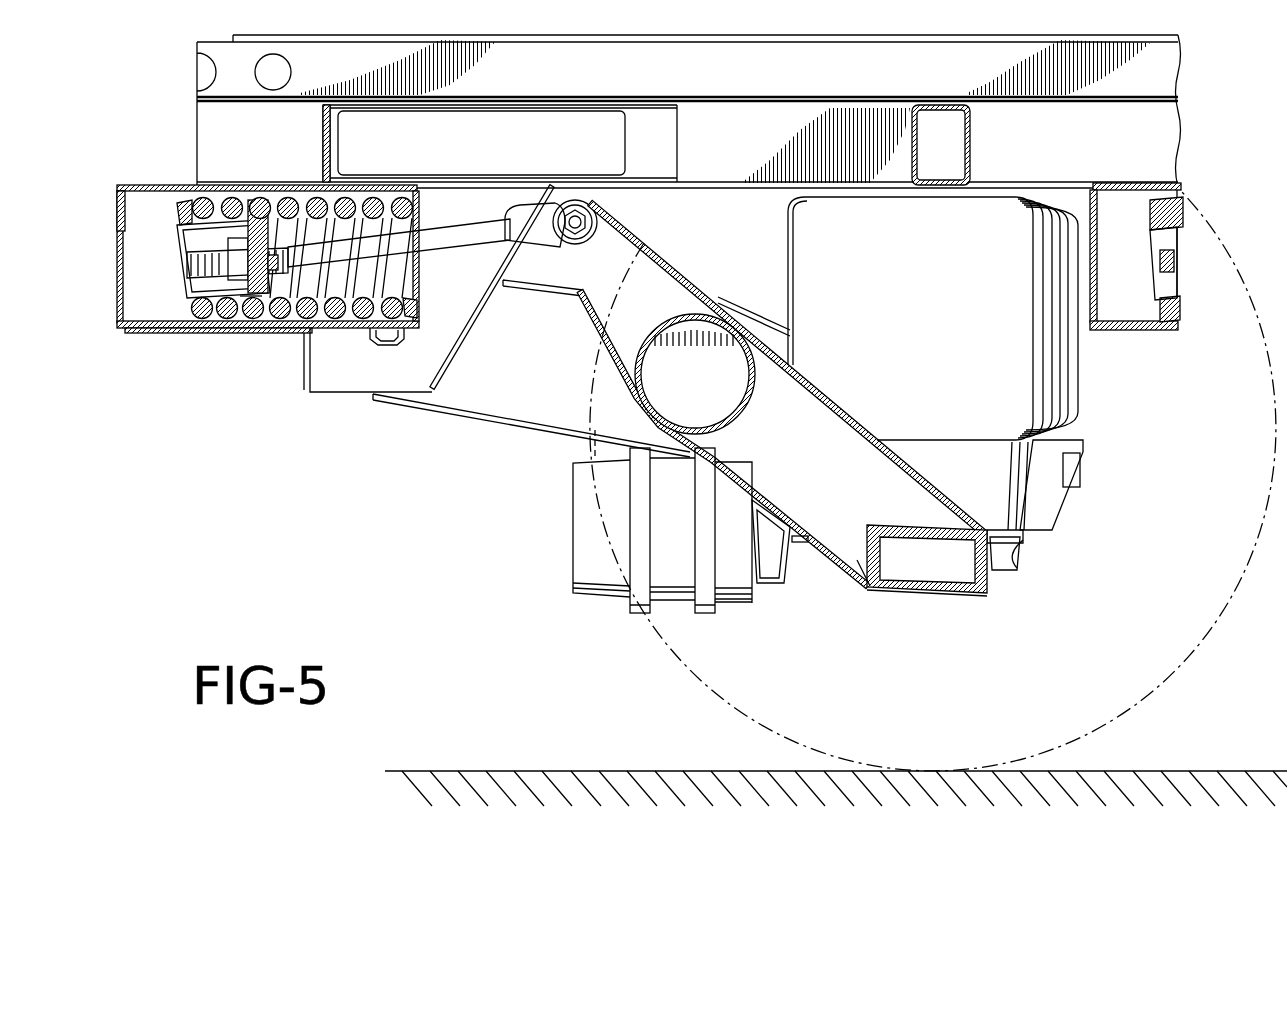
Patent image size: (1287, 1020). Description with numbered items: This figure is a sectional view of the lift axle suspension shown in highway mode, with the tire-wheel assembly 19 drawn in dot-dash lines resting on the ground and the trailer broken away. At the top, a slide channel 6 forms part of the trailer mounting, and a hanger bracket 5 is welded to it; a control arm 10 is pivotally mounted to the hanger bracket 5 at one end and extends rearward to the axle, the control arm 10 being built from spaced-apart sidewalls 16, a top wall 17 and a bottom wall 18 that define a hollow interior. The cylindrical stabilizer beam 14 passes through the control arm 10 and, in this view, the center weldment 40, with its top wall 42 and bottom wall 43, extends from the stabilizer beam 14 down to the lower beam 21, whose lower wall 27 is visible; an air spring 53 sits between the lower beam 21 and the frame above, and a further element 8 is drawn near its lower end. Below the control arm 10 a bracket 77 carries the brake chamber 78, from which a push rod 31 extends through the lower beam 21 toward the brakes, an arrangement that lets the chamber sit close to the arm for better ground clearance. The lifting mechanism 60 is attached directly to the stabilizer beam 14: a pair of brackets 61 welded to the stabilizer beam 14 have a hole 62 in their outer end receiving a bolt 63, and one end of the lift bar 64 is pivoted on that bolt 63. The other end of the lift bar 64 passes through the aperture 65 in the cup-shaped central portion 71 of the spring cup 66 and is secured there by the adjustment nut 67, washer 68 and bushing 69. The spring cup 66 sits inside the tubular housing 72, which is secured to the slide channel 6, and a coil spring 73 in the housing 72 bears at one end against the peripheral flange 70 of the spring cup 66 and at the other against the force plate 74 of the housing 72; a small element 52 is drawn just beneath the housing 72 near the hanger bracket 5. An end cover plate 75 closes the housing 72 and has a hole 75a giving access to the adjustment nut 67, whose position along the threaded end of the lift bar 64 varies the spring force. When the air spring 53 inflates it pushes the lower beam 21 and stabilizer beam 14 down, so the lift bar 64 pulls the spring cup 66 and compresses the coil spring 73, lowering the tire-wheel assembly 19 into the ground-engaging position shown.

The slide channel 6 is at (208, 121).
The tubular housing 72 is at (210, 190).
The end cover plate 75 is at (118, 313).
The hole 75a is at (120, 208).
The peripheral flange 70 is at (190, 215).
The lifting mechanism 60 is at (175, 353).
The cup-shaped central portion 71 is at (180, 243).
The spring cup 66 is at (196, 288).
The bushing 69 is at (262, 202).
The coil spring 73 is at (320, 205).
The aperture 65 is at (277, 262).
The adjustment nut 67 is at (238, 282).
The washer 68 is at (250, 298).
The lift bar 64 is at (454, 233).
The bolt 63 is at (575, 221).
The force plate 74 is at (412, 306).
The bracket 52 is at (382, 338).
The hanger bracket 5 is at (402, 373).
The hole 62 is at (577, 245).
The bracket 61 is at (648, 277).
The center weldment 40 is at (838, 392).
The stabilizer beam 14 is at (752, 392).
The top wall 17 is at (763, 313).
The air spring 53 is at (1084, 381).
The top wall 42 is at (930, 488).
The lower bracket 8 is at (1050, 500).
The push rod 31 is at (1000, 542).
The lower beam 21 is at (935, 597).
The lower wall 27 is at (963, 594).
The bottom wall 43 is at (857, 569).
The bracket 77 is at (771, 590).
The brake chamber 78 is at (598, 540).
The sidewall 16 is at (476, 382).
The bottom wall 18 is at (541, 427).
The control arm 10 is at (501, 408).
The tire-wheel assembly 19 is at (1152, 698).